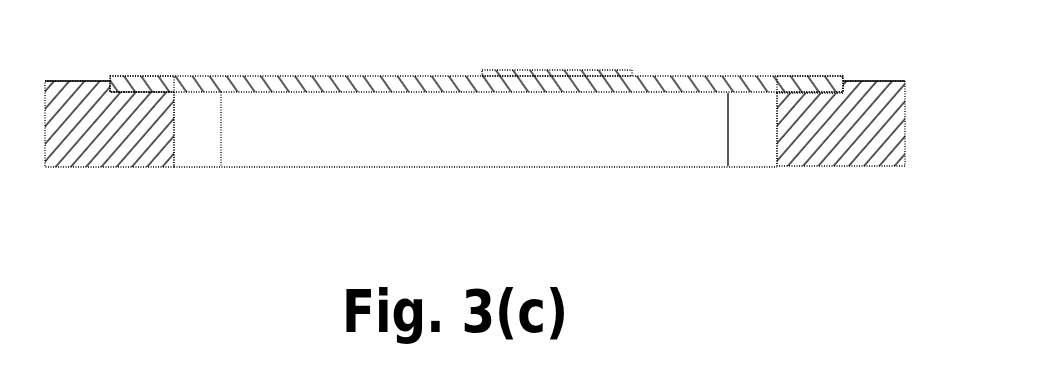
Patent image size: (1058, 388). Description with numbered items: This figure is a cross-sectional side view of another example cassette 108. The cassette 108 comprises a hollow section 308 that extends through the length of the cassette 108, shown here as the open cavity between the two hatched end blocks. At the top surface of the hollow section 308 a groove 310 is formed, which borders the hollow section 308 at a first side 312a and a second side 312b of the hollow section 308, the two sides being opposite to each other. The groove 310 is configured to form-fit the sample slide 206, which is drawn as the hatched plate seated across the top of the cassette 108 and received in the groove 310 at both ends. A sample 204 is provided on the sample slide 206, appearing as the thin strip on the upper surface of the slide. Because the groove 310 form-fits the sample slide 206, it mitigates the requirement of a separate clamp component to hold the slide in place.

The cassette 108 is at (488, 163).
The sample 204 is at (594, 42).
The sample slide 206 is at (476, 52).
The hollow section 308 is at (475, 177).
The groove 310 is at (534, 59).
The first side 312a is at (238, 152).
The second side 312b is at (704, 171).